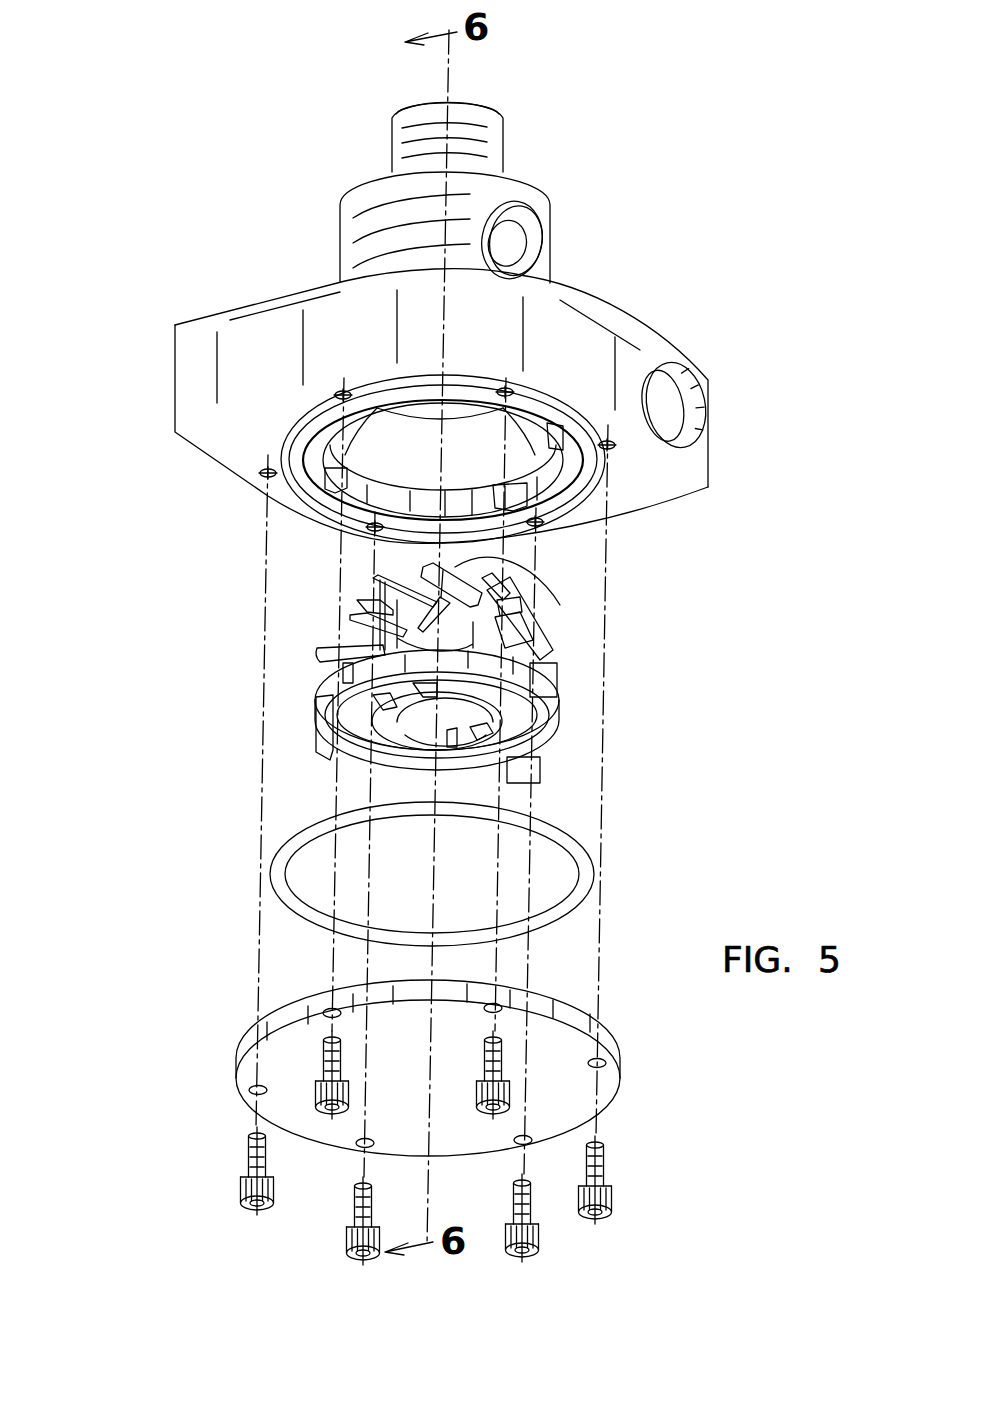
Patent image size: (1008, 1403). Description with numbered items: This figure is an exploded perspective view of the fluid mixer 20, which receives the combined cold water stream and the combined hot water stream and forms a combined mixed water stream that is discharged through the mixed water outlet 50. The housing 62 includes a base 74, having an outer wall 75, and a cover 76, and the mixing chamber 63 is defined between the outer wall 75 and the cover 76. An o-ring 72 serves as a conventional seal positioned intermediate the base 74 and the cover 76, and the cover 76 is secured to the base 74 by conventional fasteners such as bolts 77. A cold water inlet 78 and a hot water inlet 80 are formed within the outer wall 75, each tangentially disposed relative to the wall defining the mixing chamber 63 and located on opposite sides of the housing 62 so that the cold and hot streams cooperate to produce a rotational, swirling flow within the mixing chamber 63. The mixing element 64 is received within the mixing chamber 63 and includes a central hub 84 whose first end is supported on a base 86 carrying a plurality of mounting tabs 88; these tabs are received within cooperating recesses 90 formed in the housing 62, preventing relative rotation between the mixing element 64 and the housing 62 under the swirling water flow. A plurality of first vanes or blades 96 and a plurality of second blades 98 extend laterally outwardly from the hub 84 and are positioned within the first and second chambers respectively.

The mixer 20 is at (693, 128).
The mixed water outlet 50 is at (505, 153).
The housing 62 is at (665, 1091).
The mixing chamber 63 is at (374, 494).
The mixing element 64 is at (696, 619).
The o-ring 72 is at (592, 871).
The base 74 is at (622, 324).
The outer wall 75 is at (245, 312).
The cover 76 is at (237, 1053).
The bolts 77 is at (318, 1108).
The cold water inlet 78 is at (690, 406).
The hot water inlet 80 is at (175, 376).
The central hub 84 is at (395, 563).
The base 86 is at (556, 722).
The mounting tabs 88 is at (558, 662).
The recesses 90 is at (366, 526).
The first vanes or blades 96 is at (490, 632).
The second blades 98 is at (458, 585).